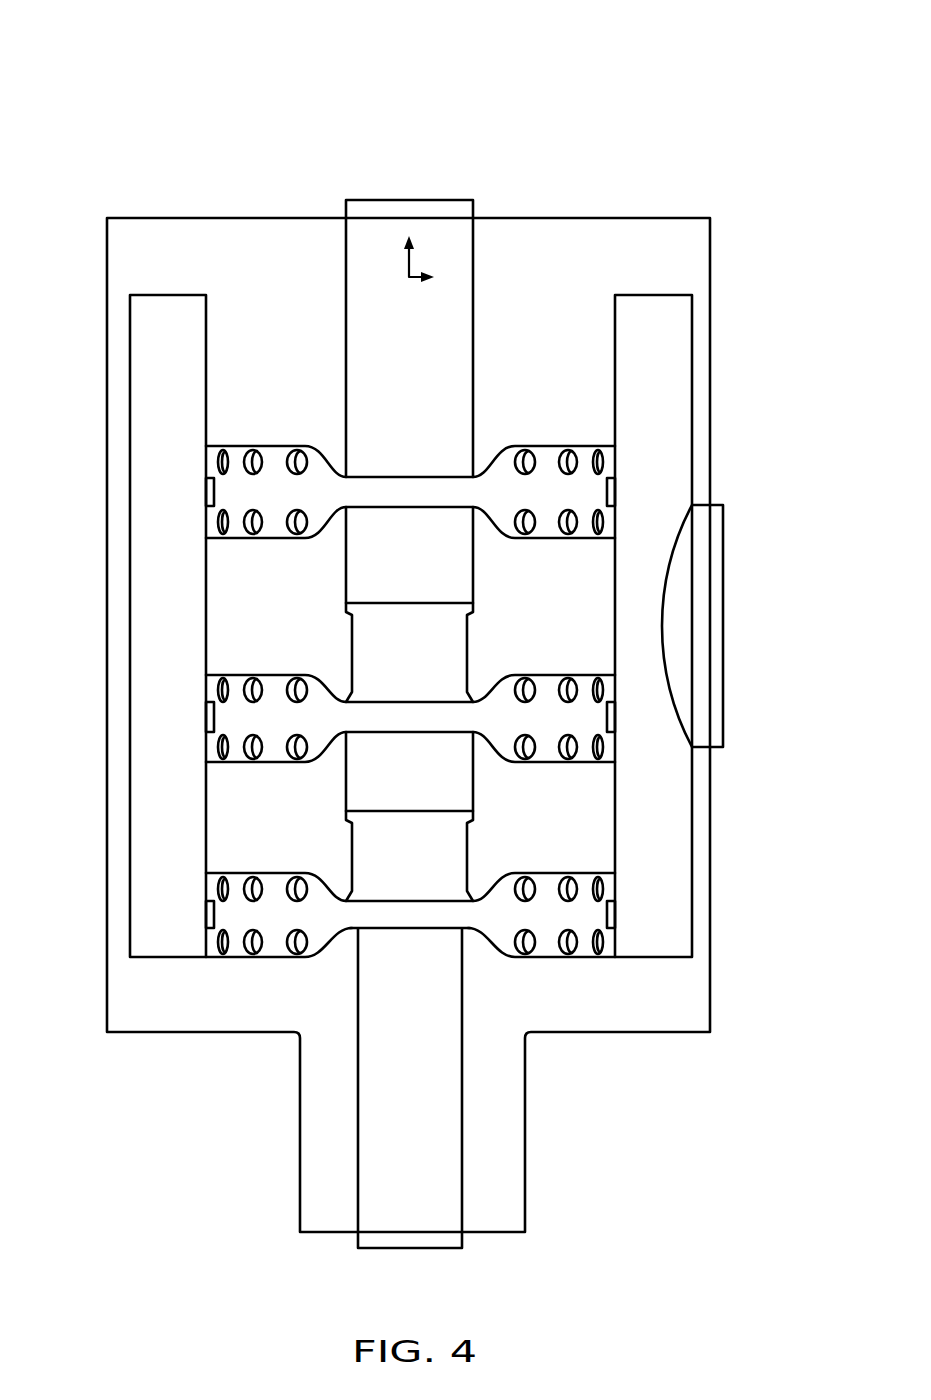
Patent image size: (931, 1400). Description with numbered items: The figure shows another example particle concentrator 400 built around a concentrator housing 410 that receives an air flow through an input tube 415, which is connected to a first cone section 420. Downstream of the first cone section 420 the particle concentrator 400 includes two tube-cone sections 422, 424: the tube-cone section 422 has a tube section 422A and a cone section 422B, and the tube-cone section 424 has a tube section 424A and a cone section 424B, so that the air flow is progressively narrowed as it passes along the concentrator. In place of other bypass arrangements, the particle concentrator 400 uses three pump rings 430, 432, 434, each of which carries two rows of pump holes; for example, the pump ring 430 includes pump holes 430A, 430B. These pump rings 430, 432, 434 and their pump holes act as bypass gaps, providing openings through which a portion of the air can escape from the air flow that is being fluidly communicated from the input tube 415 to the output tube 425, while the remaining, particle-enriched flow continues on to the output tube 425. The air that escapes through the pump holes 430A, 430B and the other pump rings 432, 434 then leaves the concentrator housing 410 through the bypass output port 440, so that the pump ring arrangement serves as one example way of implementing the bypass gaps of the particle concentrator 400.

The particle concentrator 400 is at (413, 80).
The concentrator housing 410 is at (702, 232).
The input tube 415 is at (473, 277).
The first cone section 420 is at (467, 390).
The tube-cone section 422 is at (498, 510).
The tube section 422A is at (378, 572).
The cone section 422B is at (378, 657).
The tube-cone section 424 is at (498, 735).
The tube section 424A is at (378, 800).
The cone section 424B is at (378, 852).
The output tube 425 is at (452, 1018).
The pump ring 430 is at (207, 490).
The pump hole 430A is at (288, 446).
The pump hole 430B is at (288, 538).
The pump ring 432 is at (207, 715).
The pump ring 434 is at (207, 913).
The bypass output port 440 is at (693, 677).